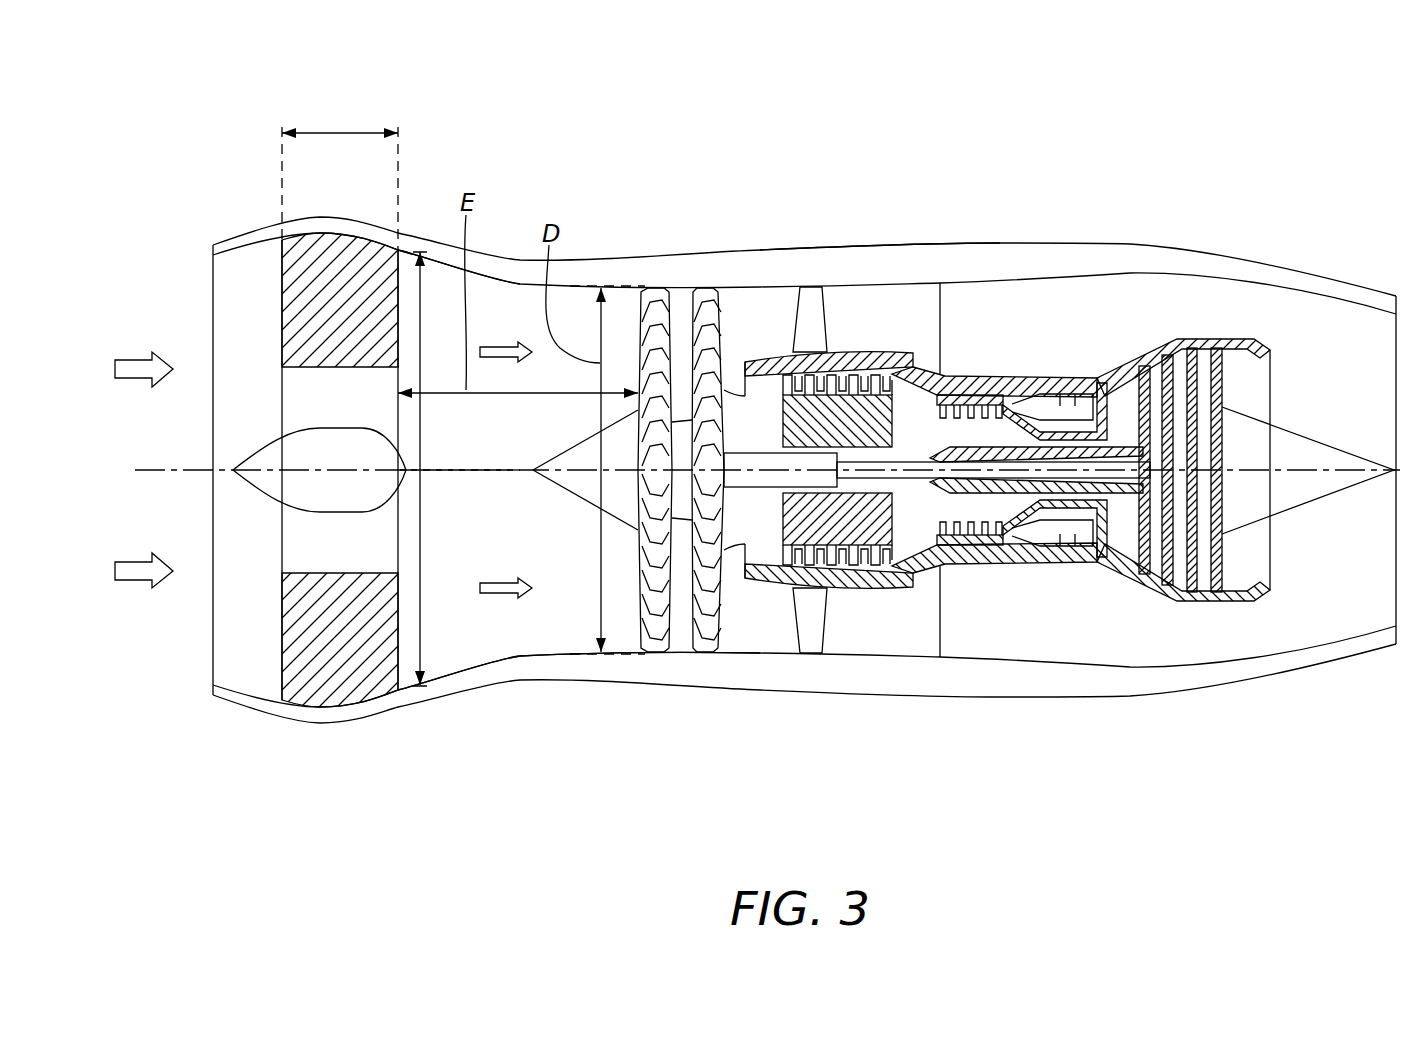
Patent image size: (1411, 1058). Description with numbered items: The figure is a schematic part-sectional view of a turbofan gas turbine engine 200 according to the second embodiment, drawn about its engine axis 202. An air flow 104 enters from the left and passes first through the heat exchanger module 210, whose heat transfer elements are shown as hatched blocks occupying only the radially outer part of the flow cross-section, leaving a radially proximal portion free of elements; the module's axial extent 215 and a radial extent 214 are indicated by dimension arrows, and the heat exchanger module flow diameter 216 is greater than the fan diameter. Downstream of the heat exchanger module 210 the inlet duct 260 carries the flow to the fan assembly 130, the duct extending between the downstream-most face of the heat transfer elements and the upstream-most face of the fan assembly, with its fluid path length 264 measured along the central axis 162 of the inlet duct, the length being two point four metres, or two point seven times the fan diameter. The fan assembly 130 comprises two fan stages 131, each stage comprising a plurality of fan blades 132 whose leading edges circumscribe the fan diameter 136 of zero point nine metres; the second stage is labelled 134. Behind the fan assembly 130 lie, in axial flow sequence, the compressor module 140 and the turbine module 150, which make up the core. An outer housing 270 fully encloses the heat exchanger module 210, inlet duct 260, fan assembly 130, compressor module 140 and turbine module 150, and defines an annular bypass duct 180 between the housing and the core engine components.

The turbofan gas turbine engine 200 is at (205, 90).
The central axis 202 is at (152, 469).
The air flow 104 is at (132, 358).
The heat exchanger module 210 is at (300, 690).
The fan axial length 215 is at (342, 130).
The fan diameter 214 is at (402, 672).
The flow diameter 216 is at (420, 347).
The central axis 162 is at (451, 472).
The fluid path length 264 is at (468, 388).
The inlet duct 260 is at (507, 632).
The fan assembly 130 is at (644, 466).
The fan stage 131 is at (644, 475).
The fan diameter 136 is at (603, 347).
The second fan blade row 134 is at (642, 318).
The fan blades 132 is at (710, 343).
The annular bypass duct 180 is at (899, 300).
The outer housing 270 is at (870, 243).
The compressor module 140 is at (903, 605).
The turbine module 150 is at (1136, 598).